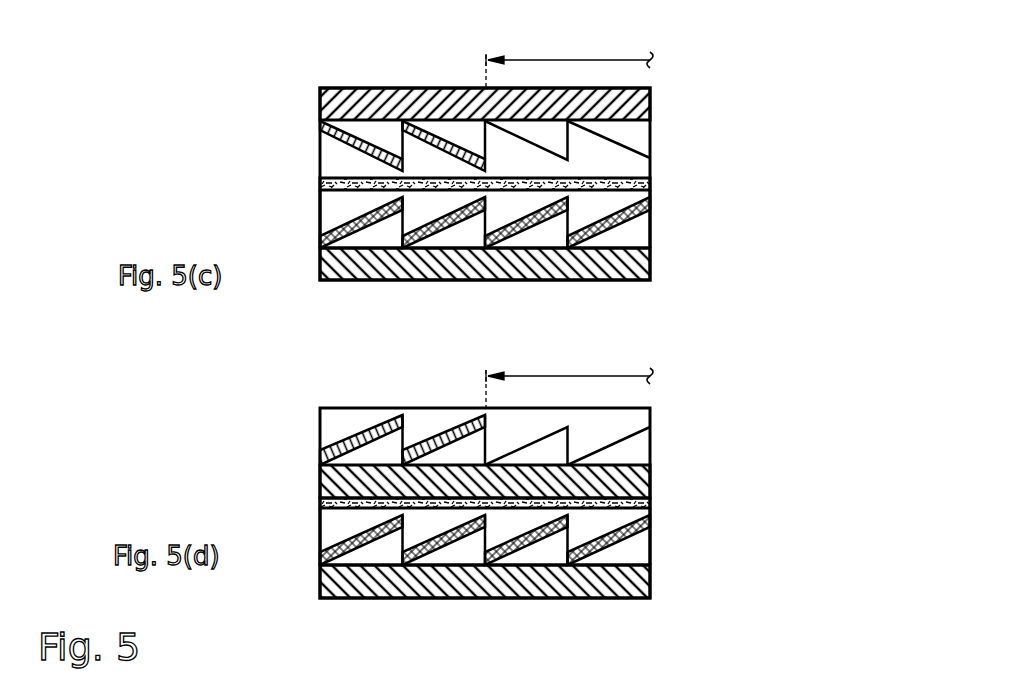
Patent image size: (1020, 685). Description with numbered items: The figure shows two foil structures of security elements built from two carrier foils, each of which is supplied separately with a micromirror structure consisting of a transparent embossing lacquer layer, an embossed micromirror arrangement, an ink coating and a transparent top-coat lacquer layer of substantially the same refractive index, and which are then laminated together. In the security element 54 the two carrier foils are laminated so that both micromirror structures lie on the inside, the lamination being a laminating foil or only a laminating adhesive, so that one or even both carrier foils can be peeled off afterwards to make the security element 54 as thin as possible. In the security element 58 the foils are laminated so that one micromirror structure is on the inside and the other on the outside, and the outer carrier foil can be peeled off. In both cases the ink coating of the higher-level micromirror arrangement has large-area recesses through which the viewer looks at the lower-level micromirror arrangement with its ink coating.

The security element 54 is at (195, 132).
The security element 58 is at (195, 450).